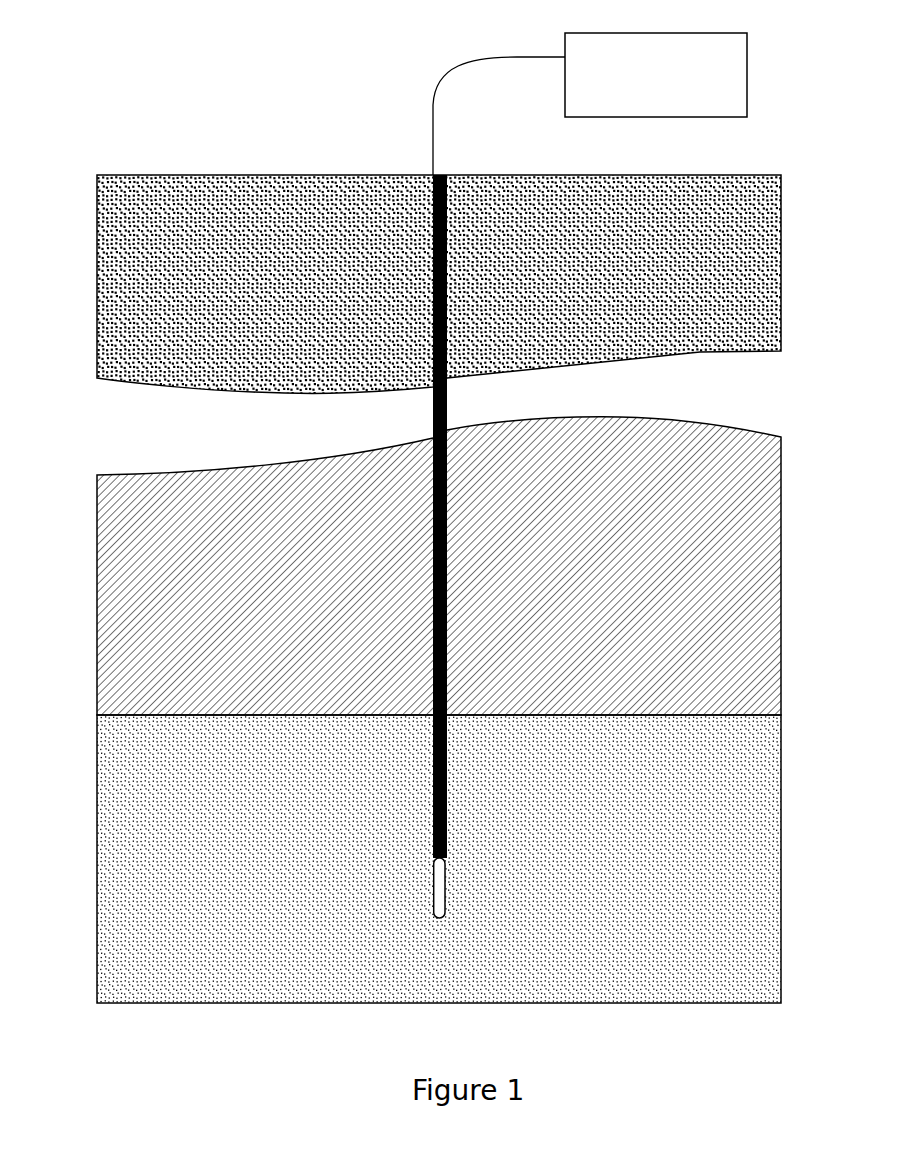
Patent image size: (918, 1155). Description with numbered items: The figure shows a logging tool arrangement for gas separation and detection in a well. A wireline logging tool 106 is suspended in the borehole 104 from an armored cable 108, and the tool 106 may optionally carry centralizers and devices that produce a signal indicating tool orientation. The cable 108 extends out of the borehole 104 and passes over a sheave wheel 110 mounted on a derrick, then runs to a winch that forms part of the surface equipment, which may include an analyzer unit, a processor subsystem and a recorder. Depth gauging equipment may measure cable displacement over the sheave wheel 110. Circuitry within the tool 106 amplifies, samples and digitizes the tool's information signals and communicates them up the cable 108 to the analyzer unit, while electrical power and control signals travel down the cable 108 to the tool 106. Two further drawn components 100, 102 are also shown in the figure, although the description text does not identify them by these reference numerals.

The downhole tool / sensor 100 is at (445, 880).
The wellbore 102 is at (433, 625).
The borehole 104 is at (672, 45).
The wireline logging tool 106 is at (708, 907).
The armored cable 108 is at (720, 501).
The sheave wheel 110 is at (733, 213).